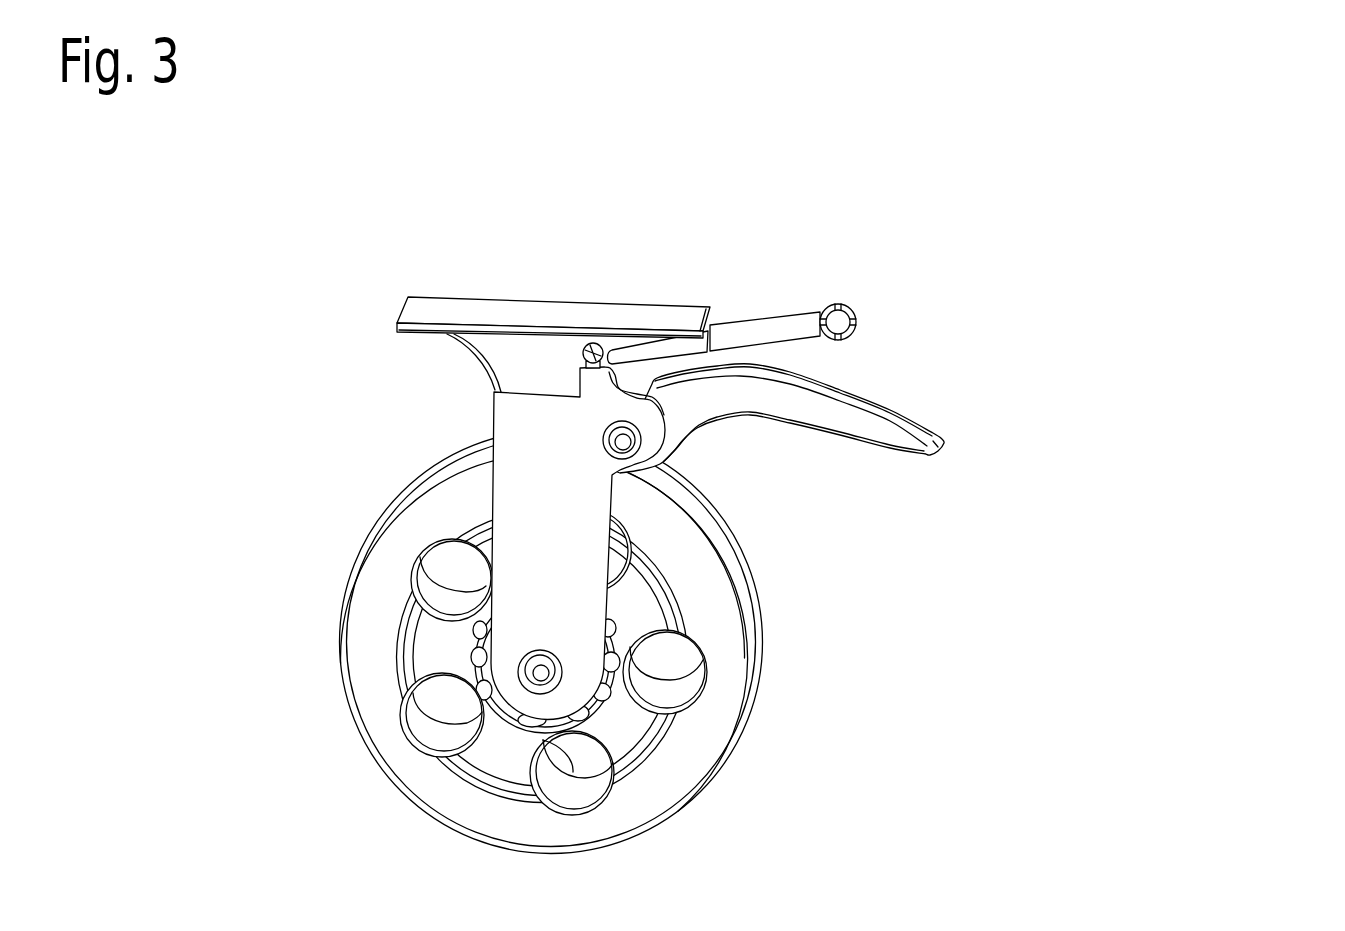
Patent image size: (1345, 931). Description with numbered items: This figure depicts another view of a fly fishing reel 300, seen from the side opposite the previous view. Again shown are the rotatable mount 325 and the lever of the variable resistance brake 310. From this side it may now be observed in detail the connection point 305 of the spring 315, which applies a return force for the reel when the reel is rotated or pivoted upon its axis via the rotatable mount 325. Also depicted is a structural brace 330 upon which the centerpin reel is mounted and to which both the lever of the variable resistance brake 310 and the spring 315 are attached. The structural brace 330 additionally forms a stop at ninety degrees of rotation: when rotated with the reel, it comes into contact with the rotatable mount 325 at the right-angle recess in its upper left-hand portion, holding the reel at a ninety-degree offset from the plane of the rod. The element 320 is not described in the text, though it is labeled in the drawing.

The fly fishing reel 300 is at (1210, 95).
The connection point 305 is at (858, 303).
The lever of the variable resistance brake 310 is at (947, 443).
The spring 315 is at (798, 309).
The wheel with roller spokes 320 is at (688, 662).
The rotatable mount 325 is at (397, 308).
The structural brace 330 is at (493, 416).